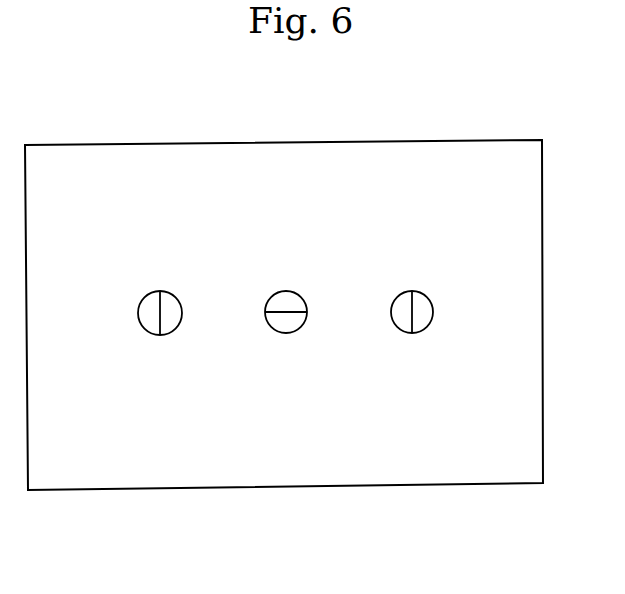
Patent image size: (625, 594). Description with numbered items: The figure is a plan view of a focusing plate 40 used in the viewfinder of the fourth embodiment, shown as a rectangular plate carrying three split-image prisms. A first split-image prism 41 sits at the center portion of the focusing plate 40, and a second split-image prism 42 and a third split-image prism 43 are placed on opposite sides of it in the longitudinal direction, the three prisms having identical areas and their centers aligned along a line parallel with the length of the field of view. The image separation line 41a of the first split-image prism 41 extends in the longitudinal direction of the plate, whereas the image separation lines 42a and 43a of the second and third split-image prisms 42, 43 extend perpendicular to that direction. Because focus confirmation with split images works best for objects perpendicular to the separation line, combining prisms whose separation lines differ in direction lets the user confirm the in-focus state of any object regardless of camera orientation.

The focusing plate 40 is at (510, 235).
The first split-image prism 41 is at (292, 333).
The image separation line 41a is at (285, 312).
The second split-image prism 42 is at (165, 335).
The image separation line 42a is at (160, 313).
The third split-image prism 43 is at (418, 333).
The image separation line 43a is at (412, 312).